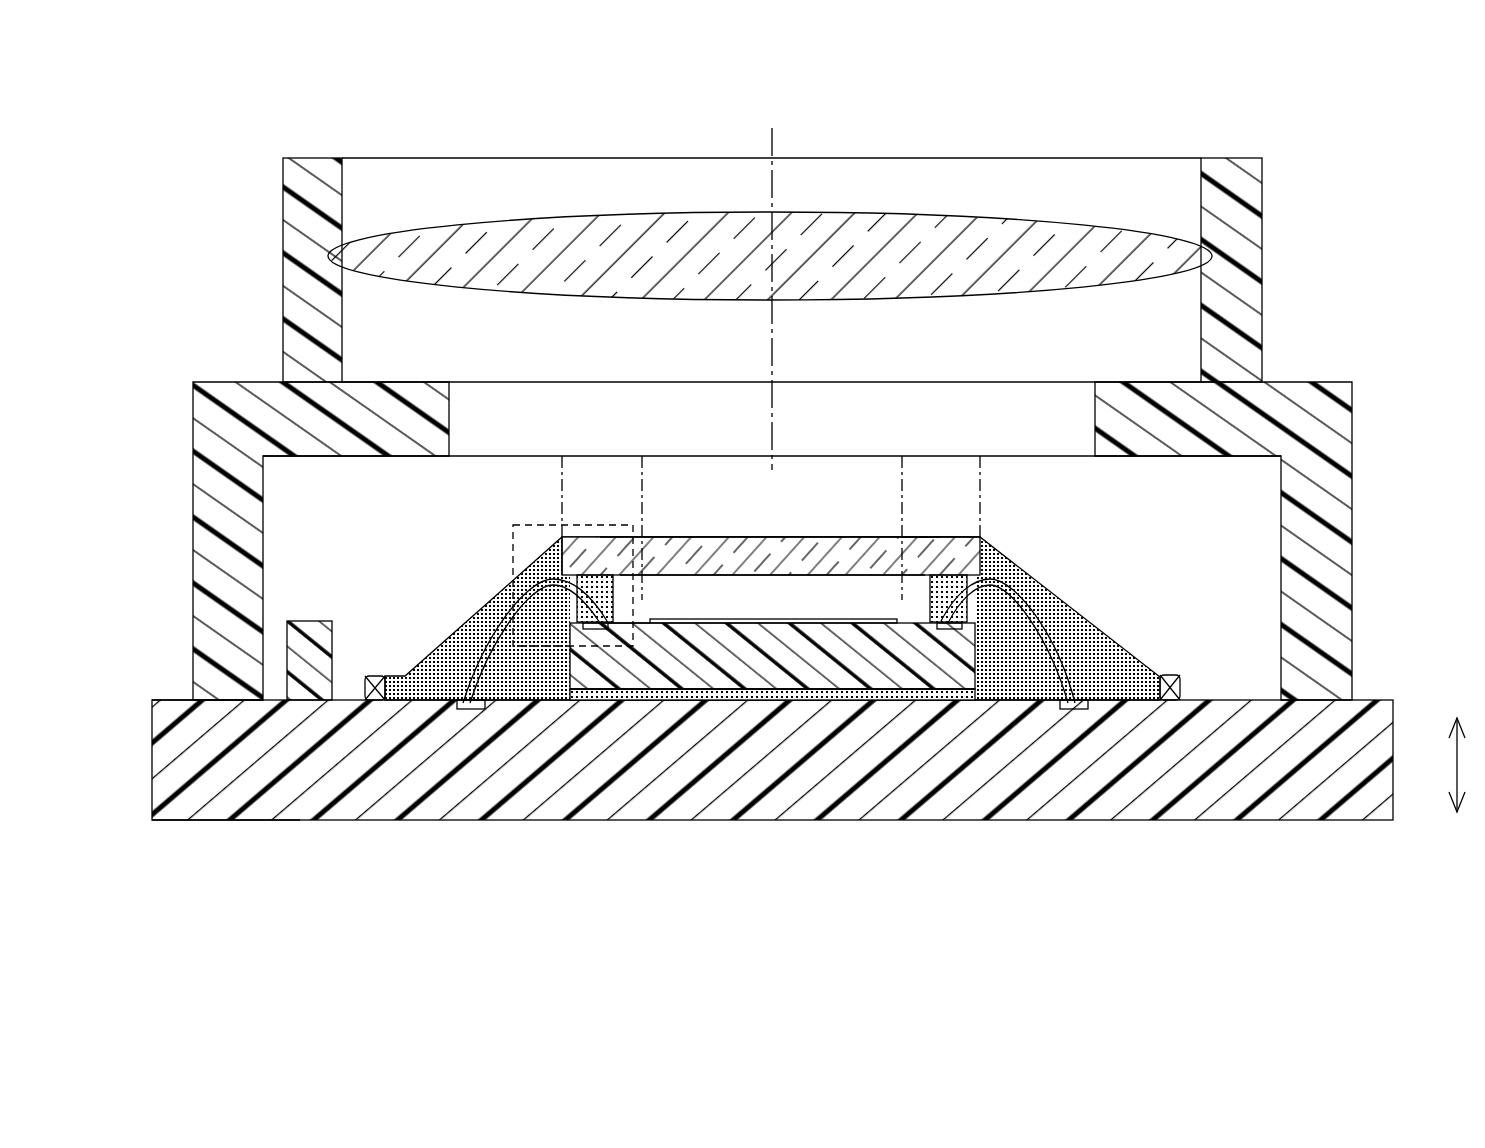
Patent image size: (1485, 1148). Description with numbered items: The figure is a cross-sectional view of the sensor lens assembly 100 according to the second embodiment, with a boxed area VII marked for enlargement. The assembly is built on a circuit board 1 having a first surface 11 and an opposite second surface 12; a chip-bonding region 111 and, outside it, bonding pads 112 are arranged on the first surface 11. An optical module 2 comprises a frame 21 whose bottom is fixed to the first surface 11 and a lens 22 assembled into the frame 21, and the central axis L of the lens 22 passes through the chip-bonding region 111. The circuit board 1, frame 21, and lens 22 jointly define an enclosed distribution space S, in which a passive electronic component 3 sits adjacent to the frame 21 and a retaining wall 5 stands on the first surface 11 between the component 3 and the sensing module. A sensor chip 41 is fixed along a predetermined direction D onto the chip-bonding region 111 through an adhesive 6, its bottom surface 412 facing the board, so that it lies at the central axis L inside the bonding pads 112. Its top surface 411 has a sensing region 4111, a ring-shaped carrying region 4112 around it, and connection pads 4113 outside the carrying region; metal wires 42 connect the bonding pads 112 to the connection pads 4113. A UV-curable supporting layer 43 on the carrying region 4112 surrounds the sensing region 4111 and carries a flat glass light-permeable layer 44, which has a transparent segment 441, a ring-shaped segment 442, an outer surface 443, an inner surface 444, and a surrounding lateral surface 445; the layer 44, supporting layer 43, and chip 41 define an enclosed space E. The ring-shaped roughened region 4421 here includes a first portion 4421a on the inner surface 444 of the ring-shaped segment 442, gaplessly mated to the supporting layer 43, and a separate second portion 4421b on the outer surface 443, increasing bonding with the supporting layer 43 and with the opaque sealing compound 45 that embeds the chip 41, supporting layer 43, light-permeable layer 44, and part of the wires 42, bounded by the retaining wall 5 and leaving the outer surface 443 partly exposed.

The sensor lens assembly 100 is at (1270, 92).
The circuit board 1 is at (158, 767).
The first surface 11 is at (182, 698).
The second surface 12 is at (172, 823).
The chip-bonding region 111 is at (934, 690).
The bonding pads 112 is at (470, 710).
The optical module 2 is at (303, 96).
The frame 21 is at (311, 162).
The lens 22 is at (436, 228).
The passive electronic component 3 is at (312, 619).
The retaining wall 5 is at (375, 674).
The adhesive 6 is at (842, 703).
The sensor chip 41 is at (970, 651).
The top surface 411 is at (547, 870).
The sensing region 4111 is at (808, 616).
The carrying region 4112 is at (633, 612).
The connection pads 4113 is at (596, 632).
The bottom surface 412 is at (898, 692).
The metal wires 42 is at (1046, 636).
The supporting layer 43 is at (927, 605).
The light-permeable layer 44 is at (831, 536).
The transparent segment 441 is at (642, 445).
The ring-shaped segment 442 is at (563, 445).
The outer surface 443 is at (739, 536).
The inner surface 444 is at (735, 578).
The surrounding lateral surface 445 is at (560, 562).
The ring-shaped roughened region 4421 is at (1135, 485).
The first portion 4421a is at (956, 582).
The second portion 4421b is at (954, 535).
The sealing compound 45 is at (1122, 663).
The central axis L is at (772, 145).
The distribution space S is at (1247, 547).
The enclosed space E is at (773, 599).
The predetermined direction D is at (1444, 765).
The enlarged region VII is at (513, 545).